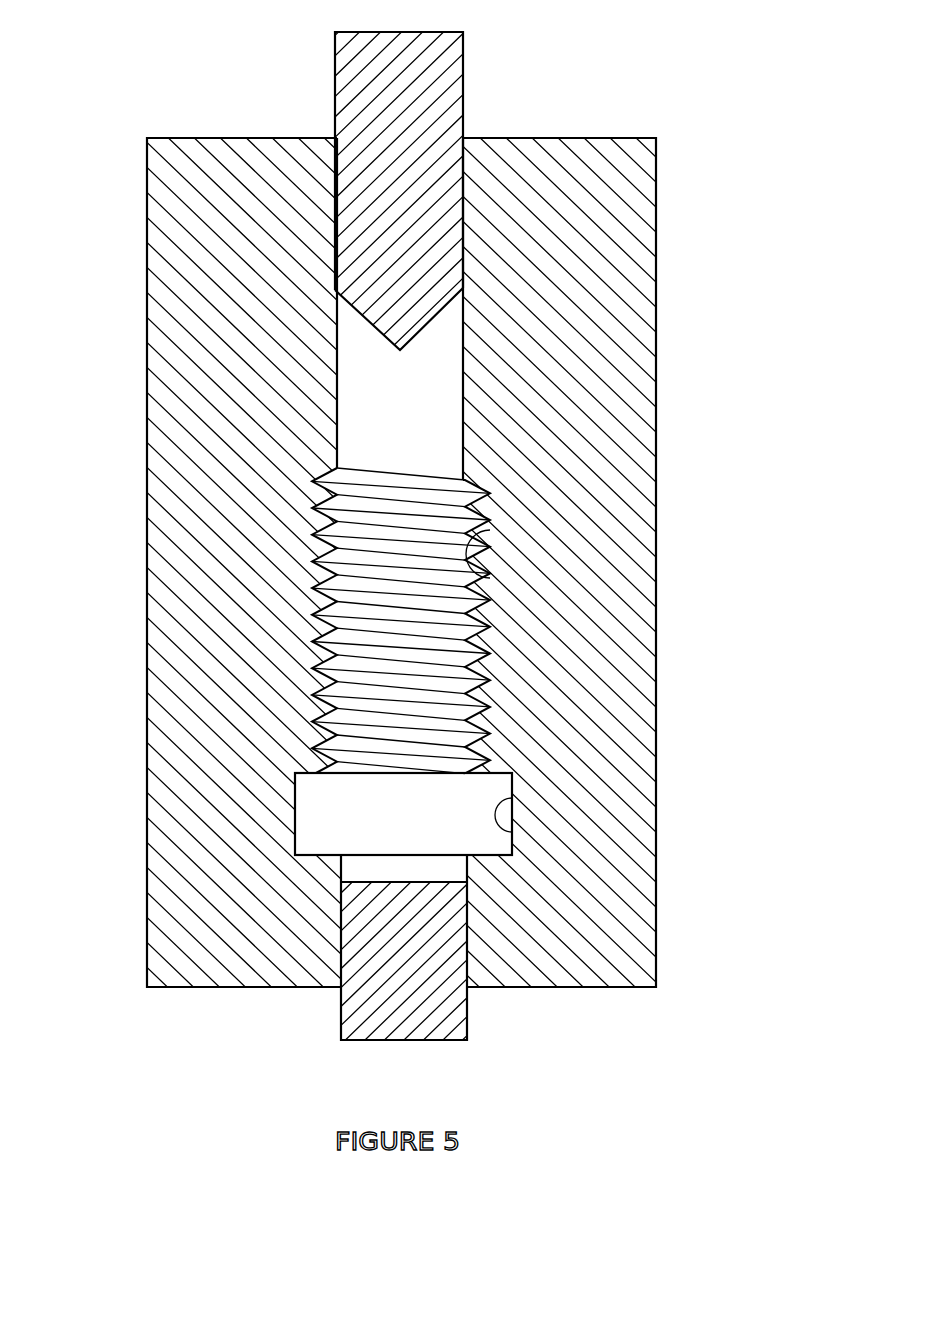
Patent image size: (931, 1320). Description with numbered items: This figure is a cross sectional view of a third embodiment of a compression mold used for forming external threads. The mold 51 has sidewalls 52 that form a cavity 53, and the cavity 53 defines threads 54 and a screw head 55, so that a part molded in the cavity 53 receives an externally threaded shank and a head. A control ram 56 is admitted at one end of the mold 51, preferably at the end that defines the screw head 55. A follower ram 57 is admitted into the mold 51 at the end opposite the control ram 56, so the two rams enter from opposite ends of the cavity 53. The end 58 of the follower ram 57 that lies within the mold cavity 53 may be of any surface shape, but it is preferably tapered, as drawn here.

The mold 51 is at (672, 128).
The sidewalls 52 is at (657, 772).
The cavity 53 is at (420, 429).
The threads 54 is at (483, 560).
The screw head 55 is at (512, 836).
The control ram 56 is at (467, 1022).
The follower ram 57 is at (465, 92).
The end of the follower ram 58 is at (372, 327).